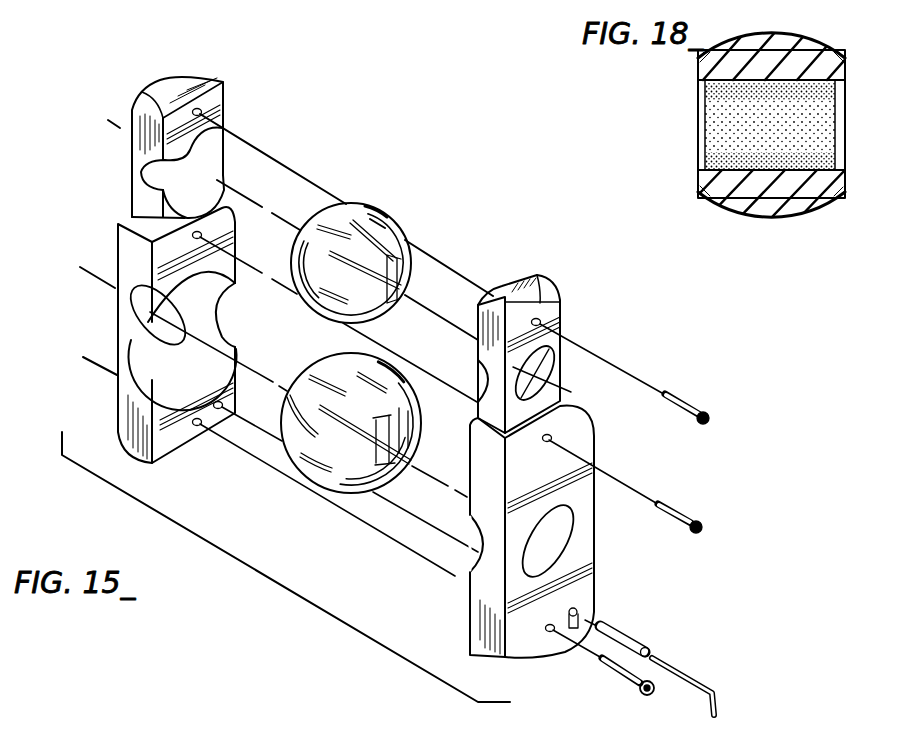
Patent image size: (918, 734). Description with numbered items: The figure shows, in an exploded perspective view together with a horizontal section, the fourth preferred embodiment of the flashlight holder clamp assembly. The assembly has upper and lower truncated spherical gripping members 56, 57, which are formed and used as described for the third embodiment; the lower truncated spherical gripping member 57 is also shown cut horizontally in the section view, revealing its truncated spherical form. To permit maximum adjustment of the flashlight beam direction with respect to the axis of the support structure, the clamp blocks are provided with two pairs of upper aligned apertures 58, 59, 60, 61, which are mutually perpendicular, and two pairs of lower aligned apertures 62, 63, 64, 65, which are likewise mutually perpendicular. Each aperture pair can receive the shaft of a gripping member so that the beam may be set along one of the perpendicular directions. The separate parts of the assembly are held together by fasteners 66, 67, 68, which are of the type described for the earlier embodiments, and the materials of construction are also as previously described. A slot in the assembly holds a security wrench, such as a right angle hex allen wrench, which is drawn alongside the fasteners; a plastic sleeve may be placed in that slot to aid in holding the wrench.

In FIG. 15, the upper truncated spherical gripping member 56 is at (385, 489).
In FIG. 15, the lower truncated spherical gripping member 57 is at (404, 236).
In FIG. 18, the lower truncated spherical gripping member 57 is at (740, 195).
In FIG. 15, the upper aligned aperture 58 is at (553, 368).
In FIG. 15, the upper aligned aperture 59 is at (216, 149).
In FIG. 15, the upper aligned aperture 60 is at (127, 153).
In FIG. 15, the upper aligned aperture 61 is at (164, 187).
In FIG. 15, the lower aligned aperture 62 is at (559, 534).
In FIG. 15, the lower aligned aperture 63 is at (228, 312).
In FIG. 15, the lower aligned aperture 64 is at (151, 362).
In FIG. 15, the lower aligned aperture 65 is at (473, 560).
In FIG. 15, the fastener 66 is at (443, 696).
In FIG. 15, the fastener 67 is at (707, 528).
In FIG. 15, the fastener 68 is at (642, 695).